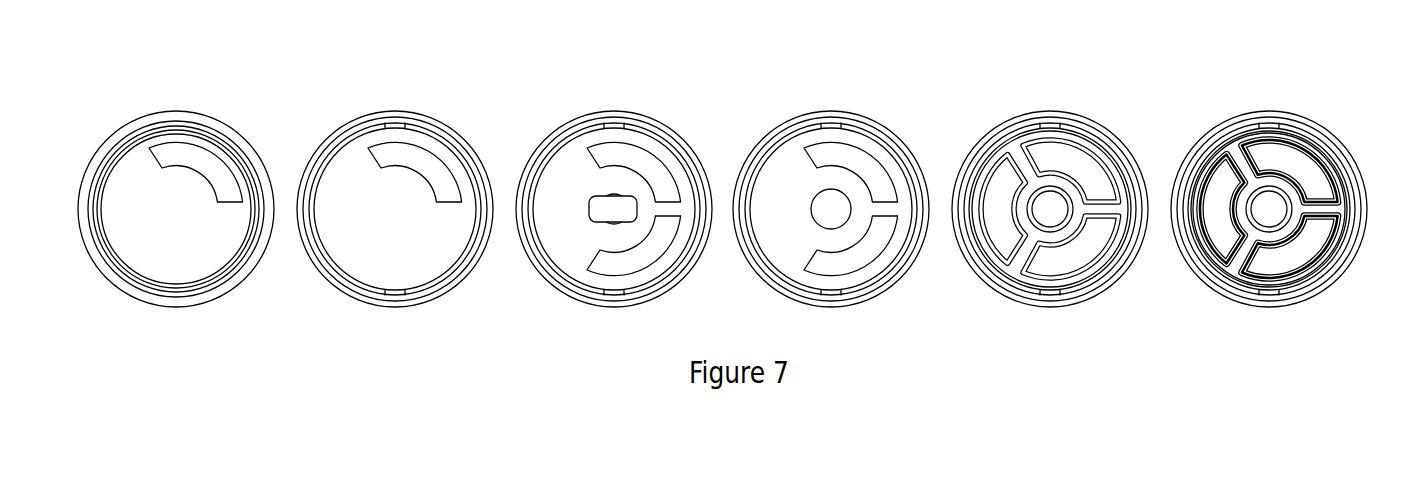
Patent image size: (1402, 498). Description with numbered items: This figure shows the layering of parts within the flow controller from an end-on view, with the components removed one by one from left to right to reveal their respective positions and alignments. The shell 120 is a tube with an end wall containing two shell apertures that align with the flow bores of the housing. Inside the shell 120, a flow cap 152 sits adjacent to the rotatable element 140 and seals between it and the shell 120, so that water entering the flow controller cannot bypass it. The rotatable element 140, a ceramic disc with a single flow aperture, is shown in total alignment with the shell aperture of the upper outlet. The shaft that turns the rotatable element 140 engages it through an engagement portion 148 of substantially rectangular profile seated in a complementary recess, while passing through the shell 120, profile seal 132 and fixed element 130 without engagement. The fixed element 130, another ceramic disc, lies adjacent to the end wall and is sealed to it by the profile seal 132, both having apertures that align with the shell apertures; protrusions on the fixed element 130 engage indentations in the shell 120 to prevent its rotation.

The shell 120 is at (458, 133).
The fixed element 130 is at (557, 182).
The profile seal 132 is at (1013, 150).
The rotatable element 140 is at (180, 199).
The engagement portion 148 is at (617, 208).
The flow cap 152 is at (235, 133).